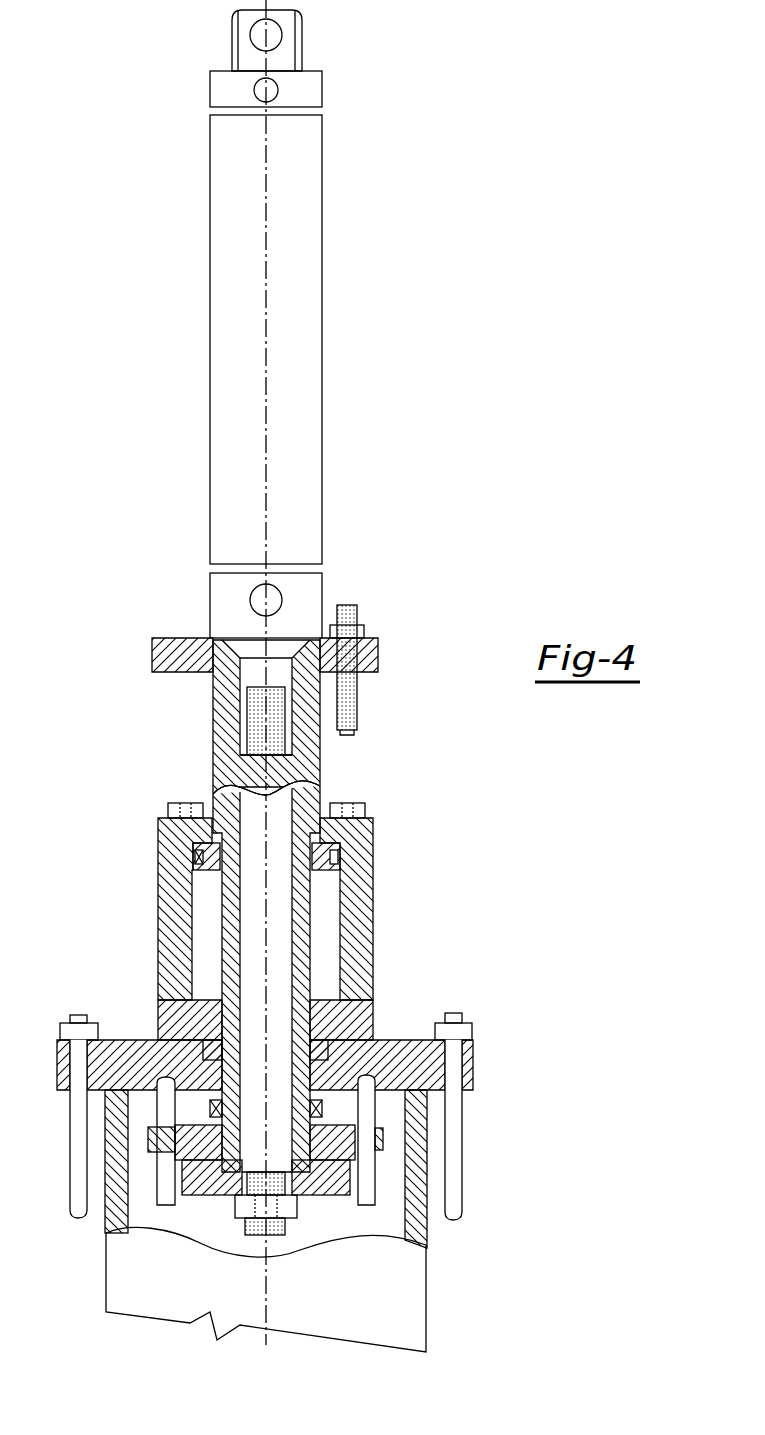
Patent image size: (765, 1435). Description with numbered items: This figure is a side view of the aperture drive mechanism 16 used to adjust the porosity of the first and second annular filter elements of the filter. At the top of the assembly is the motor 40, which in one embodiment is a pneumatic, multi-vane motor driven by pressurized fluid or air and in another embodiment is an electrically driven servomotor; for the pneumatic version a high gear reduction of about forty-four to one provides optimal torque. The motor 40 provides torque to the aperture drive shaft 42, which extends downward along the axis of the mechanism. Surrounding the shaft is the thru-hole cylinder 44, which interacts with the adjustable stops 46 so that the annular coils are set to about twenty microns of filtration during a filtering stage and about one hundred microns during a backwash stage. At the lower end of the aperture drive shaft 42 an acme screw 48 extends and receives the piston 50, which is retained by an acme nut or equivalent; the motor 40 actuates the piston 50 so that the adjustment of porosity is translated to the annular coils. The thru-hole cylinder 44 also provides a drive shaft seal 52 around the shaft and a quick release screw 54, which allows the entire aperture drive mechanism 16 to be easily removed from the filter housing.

The aperture drive mechanism 16 is at (140, 226).
The motor 40 is at (322, 309).
The aperture drive shaft 42 is at (290, 780).
The thru-hole cylinder 44 is at (332, 922).
The adjustable stops 46 is at (357, 690).
The acme screw 48 is at (252, 1188).
The piston 50 is at (288, 1203).
The drive shaft seal 52 is at (158, 1020).
The quick release screw 54 is at (185, 803).